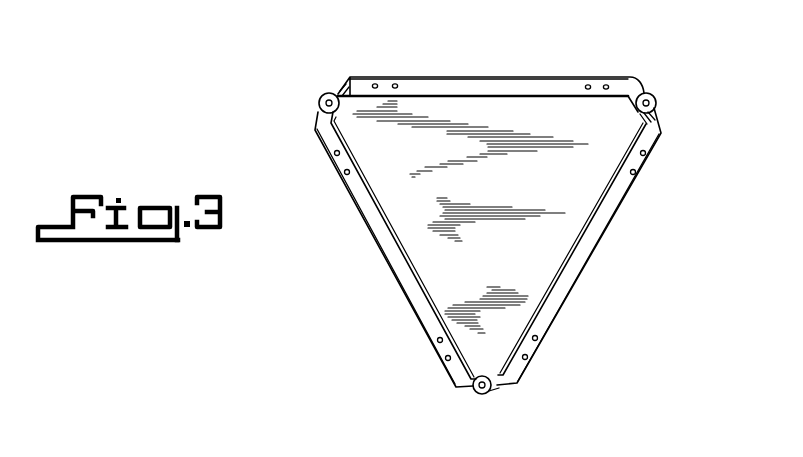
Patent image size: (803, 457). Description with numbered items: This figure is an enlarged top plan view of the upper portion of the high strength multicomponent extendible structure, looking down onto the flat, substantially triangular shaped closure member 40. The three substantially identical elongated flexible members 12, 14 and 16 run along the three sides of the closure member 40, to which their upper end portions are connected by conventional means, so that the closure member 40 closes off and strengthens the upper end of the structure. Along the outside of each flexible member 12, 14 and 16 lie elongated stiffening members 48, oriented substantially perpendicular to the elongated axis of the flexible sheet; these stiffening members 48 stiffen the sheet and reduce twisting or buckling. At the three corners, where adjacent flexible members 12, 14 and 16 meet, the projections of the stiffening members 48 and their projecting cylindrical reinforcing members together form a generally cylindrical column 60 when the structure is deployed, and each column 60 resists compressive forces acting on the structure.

The elongated flexible member 12 is at (557, 318).
The elongated flexible member 14 is at (413, 311).
The elongated flexible member 16 is at (520, 77).
The closure member 40 is at (537, 256).
The stiffening member 48 is at (443, 77).
The cylindrical column 60 is at (318, 105).